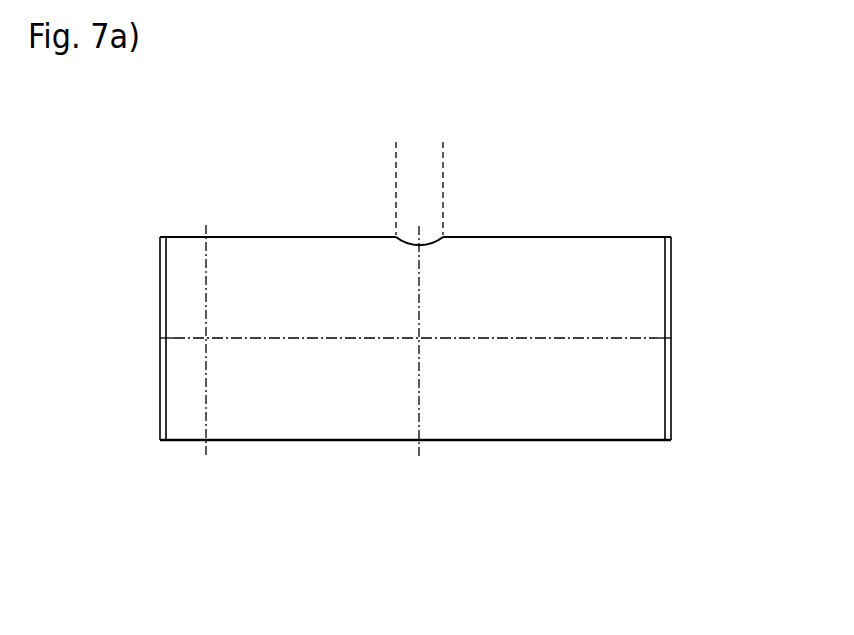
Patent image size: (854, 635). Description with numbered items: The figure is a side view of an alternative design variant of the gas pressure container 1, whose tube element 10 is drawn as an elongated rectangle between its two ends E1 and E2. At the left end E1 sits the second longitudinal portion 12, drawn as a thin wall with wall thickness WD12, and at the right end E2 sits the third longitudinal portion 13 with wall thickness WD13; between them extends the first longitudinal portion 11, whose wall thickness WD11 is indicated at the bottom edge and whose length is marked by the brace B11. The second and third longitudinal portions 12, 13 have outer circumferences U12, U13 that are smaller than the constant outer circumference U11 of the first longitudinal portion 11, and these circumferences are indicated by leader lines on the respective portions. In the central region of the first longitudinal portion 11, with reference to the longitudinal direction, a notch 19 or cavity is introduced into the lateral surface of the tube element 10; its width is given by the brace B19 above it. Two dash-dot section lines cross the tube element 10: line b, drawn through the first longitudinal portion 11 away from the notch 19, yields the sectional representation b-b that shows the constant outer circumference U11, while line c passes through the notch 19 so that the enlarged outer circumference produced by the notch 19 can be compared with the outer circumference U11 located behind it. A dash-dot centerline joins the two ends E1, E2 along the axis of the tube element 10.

The gas pressure container 1 is at (478, 117).
The tube element 10 is at (334, 447).
The first longitudinal portion 11 is at (230, 420).
The second longitudinal portion 12 is at (162, 283).
The third longitudinal portion 13 is at (670, 291).
The notch 19 is at (410, 237).
The outer circumference of the second longitudinal portion U12 is at (162, 237).
The outer circumference of the third longitudinal portion U13 is at (670, 238).
The outer circumference of the first longitudinal portion U11 is at (553, 444).
The wall thickness of the second longitudinal portion WD12 is at (176, 427).
The wall thickness of the third longitudinal portion WD13 is at (656, 427).
The wall thickness of the first longitudinal portion WD11 is at (503, 424).
The width of the first longitudinal portion B11 is at (665, 445).
The width of the notch B19 is at (443, 142).
The end of the tube element E1 is at (147, 347).
The end of the tube element E2 is at (718, 350).
The section line b- b is at (207, 341).
The section line c- c is at (421, 342).